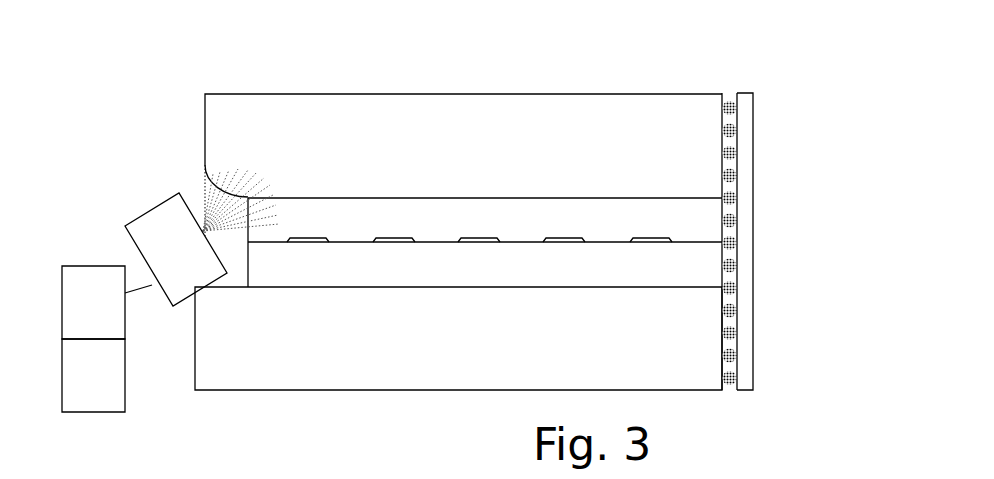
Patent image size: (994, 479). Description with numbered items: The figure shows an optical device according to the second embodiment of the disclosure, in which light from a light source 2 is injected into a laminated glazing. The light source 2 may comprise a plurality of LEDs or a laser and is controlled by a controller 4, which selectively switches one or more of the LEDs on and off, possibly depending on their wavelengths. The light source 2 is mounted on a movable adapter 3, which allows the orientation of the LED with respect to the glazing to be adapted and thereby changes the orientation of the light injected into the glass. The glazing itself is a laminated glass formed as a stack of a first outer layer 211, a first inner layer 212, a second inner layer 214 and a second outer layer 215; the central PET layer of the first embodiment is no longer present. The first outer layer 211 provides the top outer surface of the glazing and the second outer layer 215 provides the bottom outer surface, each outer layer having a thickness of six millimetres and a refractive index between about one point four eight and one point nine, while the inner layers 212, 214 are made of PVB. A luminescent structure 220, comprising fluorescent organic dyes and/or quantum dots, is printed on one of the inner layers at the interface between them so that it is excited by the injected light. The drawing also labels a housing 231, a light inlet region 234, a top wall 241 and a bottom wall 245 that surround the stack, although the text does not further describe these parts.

The light source 2 is at (153, 205).
The movable adapter 3 is at (83, 262).
The controller 4 is at (83, 377).
The first outer layer 211 is at (367, 125).
The first inner layer 212 is at (688, 216).
The second inner layer 214 is at (702, 271).
The second outer layer 215 is at (692, 359).
The luminescent structure 220 is at (488, 240).
The housing 231 is at (198, 108).
The light inlet opening 234 is at (232, 195).
The top wall 241 is at (445, 92).
The bottom wall 245 is at (345, 395).